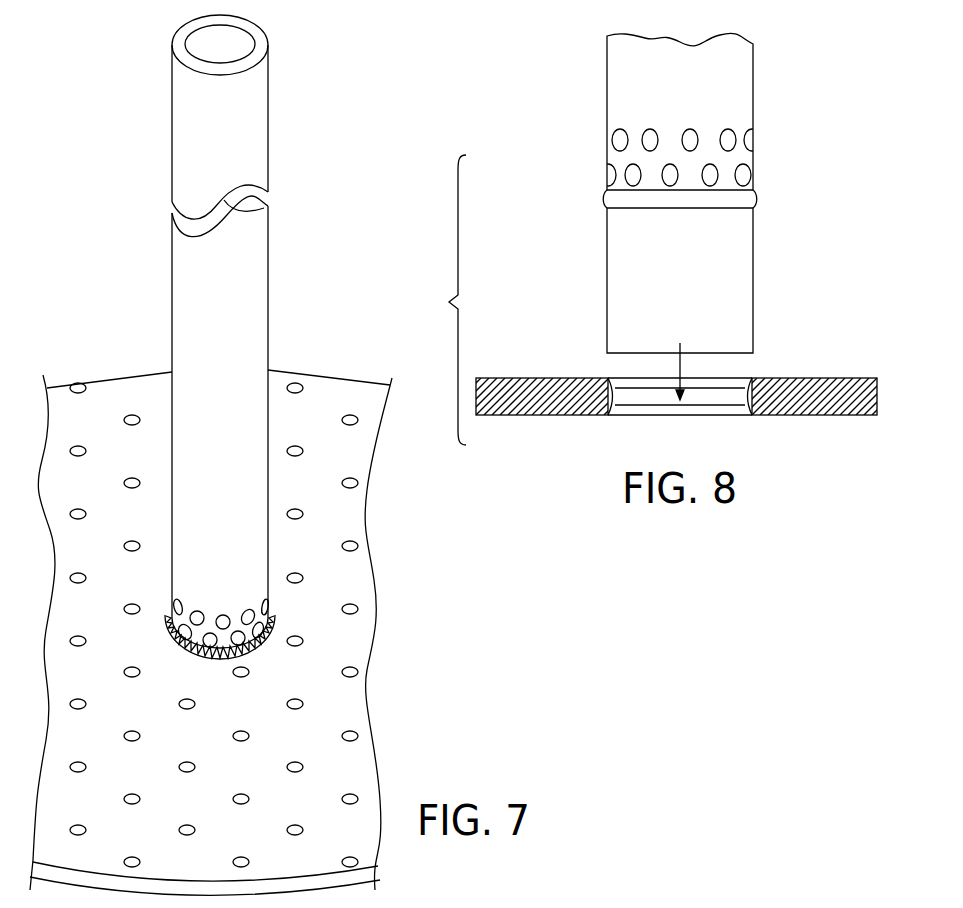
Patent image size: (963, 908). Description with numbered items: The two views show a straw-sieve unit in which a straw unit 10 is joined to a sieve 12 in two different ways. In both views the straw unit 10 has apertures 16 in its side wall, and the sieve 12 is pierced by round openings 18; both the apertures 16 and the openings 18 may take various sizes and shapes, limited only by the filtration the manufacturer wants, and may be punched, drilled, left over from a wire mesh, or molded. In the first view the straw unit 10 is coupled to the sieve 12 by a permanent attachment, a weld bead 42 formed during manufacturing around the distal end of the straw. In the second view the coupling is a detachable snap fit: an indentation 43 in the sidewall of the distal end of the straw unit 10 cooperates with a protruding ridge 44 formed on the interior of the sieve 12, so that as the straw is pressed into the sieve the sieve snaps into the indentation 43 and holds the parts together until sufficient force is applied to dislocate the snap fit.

In FIG. 7, the straw unit 10 is at (268, 272).
In FIG. 8, the straw unit 10 is at (748, 81).
In FIG. 7, the sieve 12 is at (318, 373).
In FIG. 8, the sieve 12 is at (513, 377).
In FIG. 7, the apertures 16 is at (223, 615).
In FIG. 8, the apertures 16 is at (751, 160).
In FIG. 7, the openings 18 is at (358, 545).
In FIG. 7, the weld bead 42 is at (274, 633).
In FIG. 8, the indentation 43 is at (755, 202).
In FIG. 8, the protruding ridge 44 is at (741, 406).